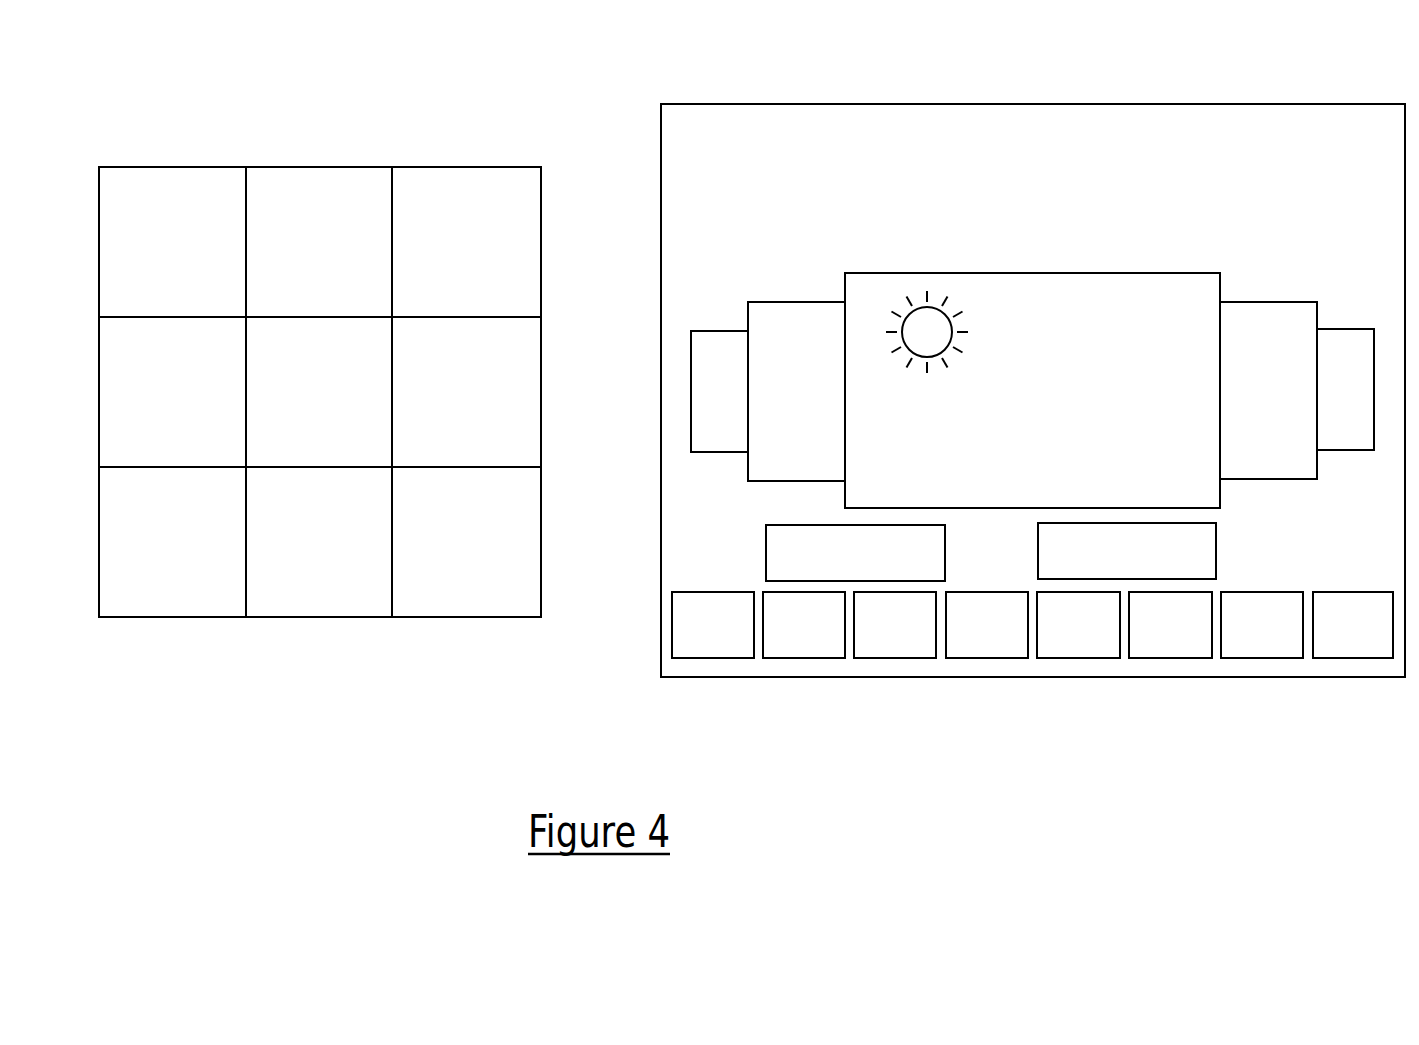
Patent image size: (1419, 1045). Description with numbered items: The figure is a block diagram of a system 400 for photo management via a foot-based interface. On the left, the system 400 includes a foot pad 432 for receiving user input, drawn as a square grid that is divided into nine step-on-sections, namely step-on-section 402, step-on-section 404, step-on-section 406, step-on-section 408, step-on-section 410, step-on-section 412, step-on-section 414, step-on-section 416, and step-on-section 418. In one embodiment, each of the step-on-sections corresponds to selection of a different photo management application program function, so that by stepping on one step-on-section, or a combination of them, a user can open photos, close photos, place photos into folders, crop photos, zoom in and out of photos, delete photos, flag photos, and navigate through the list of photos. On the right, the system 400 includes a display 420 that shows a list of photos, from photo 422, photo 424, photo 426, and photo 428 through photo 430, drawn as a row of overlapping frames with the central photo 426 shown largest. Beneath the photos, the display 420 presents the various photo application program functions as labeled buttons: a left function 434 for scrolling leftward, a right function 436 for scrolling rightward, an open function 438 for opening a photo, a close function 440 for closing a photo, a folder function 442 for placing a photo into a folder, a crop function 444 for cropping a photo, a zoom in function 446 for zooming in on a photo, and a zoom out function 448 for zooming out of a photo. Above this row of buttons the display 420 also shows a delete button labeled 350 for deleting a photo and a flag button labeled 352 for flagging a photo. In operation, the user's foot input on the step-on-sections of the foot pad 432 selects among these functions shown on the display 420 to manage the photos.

The system 400 is at (555, 38).
The step-on-section 402 is at (188, 256).
The step-on-section 404 is at (335, 256).
The step-on-section 406 is at (482, 256).
The step-on-section 408 is at (188, 406).
The step-on-section 410 is at (335, 406).
The step-on-section 412 is at (482, 406).
The step-on-section 414 is at (188, 556).
The step-on-section 416 is at (335, 556).
The step-on-section 418 is at (482, 556).
The foot pad 432 is at (337, 617).
The display 420 is at (711, 677).
The photo 422 is at (710, 331).
The photo 424 is at (797, 302).
The photo 426 is at (1010, 288).
The photo 428 is at (1257, 301).
The photo 430 is at (1343, 329).
The delete button 350 is at (853, 568).
The flag button 352 is at (1132, 568).
The left function 434 is at (672, 645).
The right function 436 is at (825, 658).
The open function 438 is at (912, 658).
The close function 440 is at (998, 658).
The folder function 442 is at (1082, 658).
The crop function 444 is at (1168, 658).
The zoom in function 446 is at (1252, 658).
The zoom out function 448 is at (1340, 658).